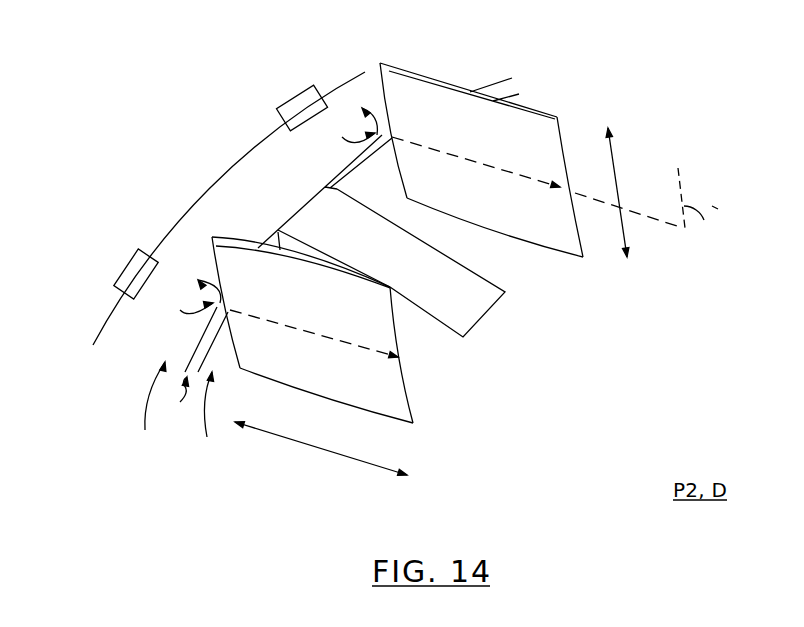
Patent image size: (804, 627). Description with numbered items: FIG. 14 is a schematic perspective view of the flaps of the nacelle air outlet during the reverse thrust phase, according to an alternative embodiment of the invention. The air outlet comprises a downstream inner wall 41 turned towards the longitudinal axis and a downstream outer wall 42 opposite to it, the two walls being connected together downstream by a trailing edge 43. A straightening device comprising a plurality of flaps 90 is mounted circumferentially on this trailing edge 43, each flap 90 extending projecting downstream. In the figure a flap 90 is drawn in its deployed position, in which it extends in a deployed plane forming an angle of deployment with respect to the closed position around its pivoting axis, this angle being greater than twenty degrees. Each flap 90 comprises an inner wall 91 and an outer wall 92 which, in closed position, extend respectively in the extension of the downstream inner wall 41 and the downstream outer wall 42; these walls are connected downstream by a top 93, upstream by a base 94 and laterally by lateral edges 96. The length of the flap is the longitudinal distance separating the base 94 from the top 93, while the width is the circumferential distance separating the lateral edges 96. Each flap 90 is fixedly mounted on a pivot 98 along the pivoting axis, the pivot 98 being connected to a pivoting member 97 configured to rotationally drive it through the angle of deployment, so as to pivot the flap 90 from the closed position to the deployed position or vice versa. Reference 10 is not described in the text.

The turbine engine part / blade section 10 is at (483, 317).
The downstream inner wall 41 is at (206, 417).
The downstream outer wall 42 is at (149, 412).
The trailing edge 43 is at (181, 405).
The flap 90 is at (465, 258).
The inner wall 91 is at (560, 252).
The outer wall 92 is at (543, 208).
The top 93 is at (560, 132).
The base 94 is at (392, 160).
The lateral edges 96 is at (423, 78).
The pivoting member 97 is at (218, 307).
The pivot 98 is at (340, 114).